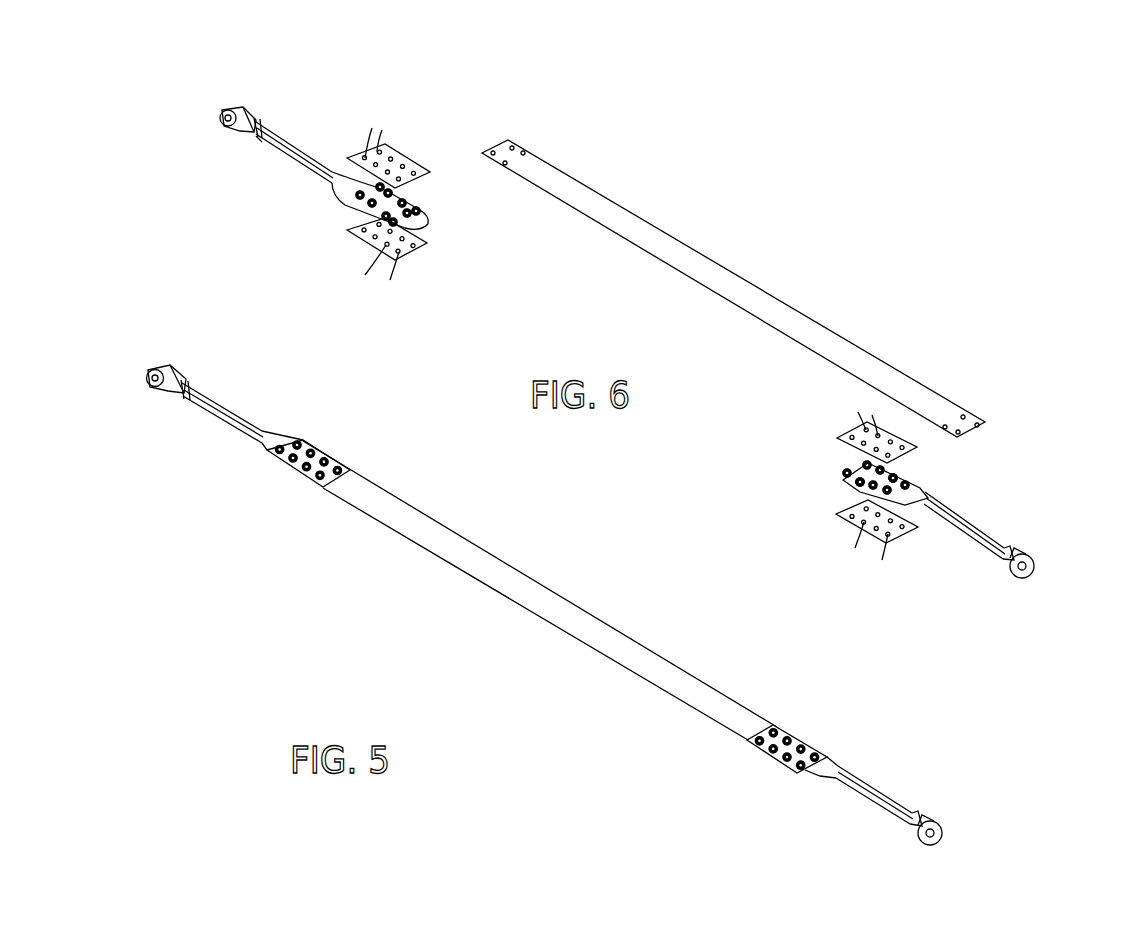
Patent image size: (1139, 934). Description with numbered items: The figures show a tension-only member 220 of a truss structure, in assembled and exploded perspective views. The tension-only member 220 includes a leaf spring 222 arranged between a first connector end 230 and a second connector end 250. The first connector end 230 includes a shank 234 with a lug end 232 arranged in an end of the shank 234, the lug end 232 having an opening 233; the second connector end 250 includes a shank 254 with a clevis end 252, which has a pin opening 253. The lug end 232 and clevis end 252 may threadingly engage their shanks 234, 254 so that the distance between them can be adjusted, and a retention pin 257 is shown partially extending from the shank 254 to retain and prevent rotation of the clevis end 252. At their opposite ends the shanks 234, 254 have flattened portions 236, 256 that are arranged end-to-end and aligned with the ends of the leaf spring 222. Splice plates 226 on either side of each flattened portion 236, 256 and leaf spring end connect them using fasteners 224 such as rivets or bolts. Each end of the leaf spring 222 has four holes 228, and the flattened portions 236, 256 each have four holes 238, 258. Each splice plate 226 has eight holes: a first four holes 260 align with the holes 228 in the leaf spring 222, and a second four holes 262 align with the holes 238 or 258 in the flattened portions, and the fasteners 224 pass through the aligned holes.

In FIG. 6, the tension-only member 220 is at (762, 264).
In FIG. 5, the tension-only member 220 is at (540, 590).
In FIG. 6, the leaf spring 222 is at (762, 264).
In FIG. 5, the leaf spring 222 is at (562, 596).
In FIG. 6, the fasteners 224 is at (421, 210).
In FIG. 5, the fasteners 224 is at (301, 445).
In FIG. 6, the splice plates 226 is at (646, 339).
In FIG. 5, the splice plates 226 is at (323, 488).
In FIG. 6, the holes 228 is at (496, 152).
In FIG. 6, the first connector end 230 is at (940, 536).
In FIG. 5, the first connector end 230 is at (903, 808).
In FIG. 6, the lug end 232 is at (1034, 569).
In FIG. 5, the lug end 232 is at (942, 826).
In FIG. 6, the eye opening 233 is at (1018, 575).
In FIG. 5, the eye opening 233 is at (926, 840).
In FIG. 6, the shank 234 is at (992, 540).
In FIG. 5, the shank 234 is at (897, 800).
In FIG. 6, the flattened portion 236 is at (930, 496).
In FIG. 6, the holes 238 is at (915, 477).
In FIG. 6, the second connector end 250 is at (307, 147).
In FIG. 5, the second connector end 250 is at (203, 393).
In FIG. 6, the clevis end 252 is at (222, 110).
In FIG. 5, the clevis end 252 is at (172, 368).
In FIG. 6, the pin opening 253 is at (219, 122).
In FIG. 5, the pin opening 253 is at (146, 381).
In FIG. 6, the shank 254 is at (292, 147).
In FIG. 5, the shank 254 is at (248, 427).
In FIG. 6, the flattened portion 256 is at (345, 200).
In FIG. 6, the retention pin 257 is at (264, 142).
In FIG. 5, the retention pin 257 is at (183, 400).
In FIG. 6, the holes 258 is at (393, 192).
In FIG. 6, the holes 260 is at (416, 172).
In FIG. 6, the holes 262 is at (364, 156).